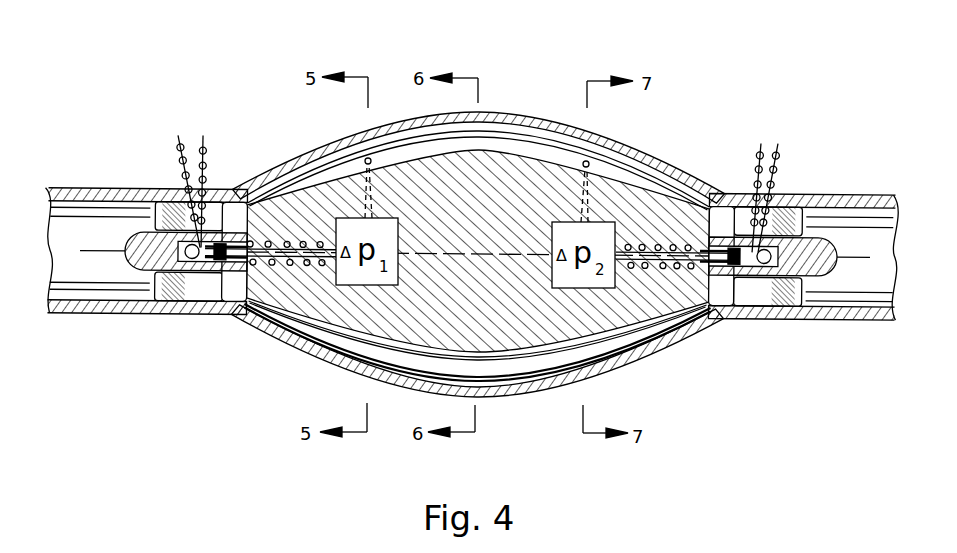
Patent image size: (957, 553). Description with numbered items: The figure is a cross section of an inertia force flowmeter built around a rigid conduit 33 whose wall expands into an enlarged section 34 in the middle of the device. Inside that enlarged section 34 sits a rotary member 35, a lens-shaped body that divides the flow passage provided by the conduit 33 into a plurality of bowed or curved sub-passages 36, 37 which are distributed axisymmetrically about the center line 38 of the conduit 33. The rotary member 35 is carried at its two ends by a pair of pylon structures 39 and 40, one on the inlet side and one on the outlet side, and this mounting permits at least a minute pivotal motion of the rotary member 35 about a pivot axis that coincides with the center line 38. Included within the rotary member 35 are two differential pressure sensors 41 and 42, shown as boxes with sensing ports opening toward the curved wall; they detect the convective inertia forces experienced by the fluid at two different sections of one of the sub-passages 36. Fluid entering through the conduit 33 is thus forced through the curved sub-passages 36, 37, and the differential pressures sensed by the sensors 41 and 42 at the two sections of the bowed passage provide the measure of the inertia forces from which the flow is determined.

The rigid conduit 33 is at (105, 188).
The enlarged section 34 is at (650, 356).
The rotary member 35 is at (500, 193).
The bowed sub-passage 36 is at (406, 128).
The bowed sub-passage 37 is at (297, 350).
The center line 38 is at (862, 260).
The pylon structure 39 is at (172, 287).
The pylon structure 40 is at (783, 308).
The differential pressure sensor 41 is at (342, 218).
The differential pressure sensor 42 is at (602, 220).